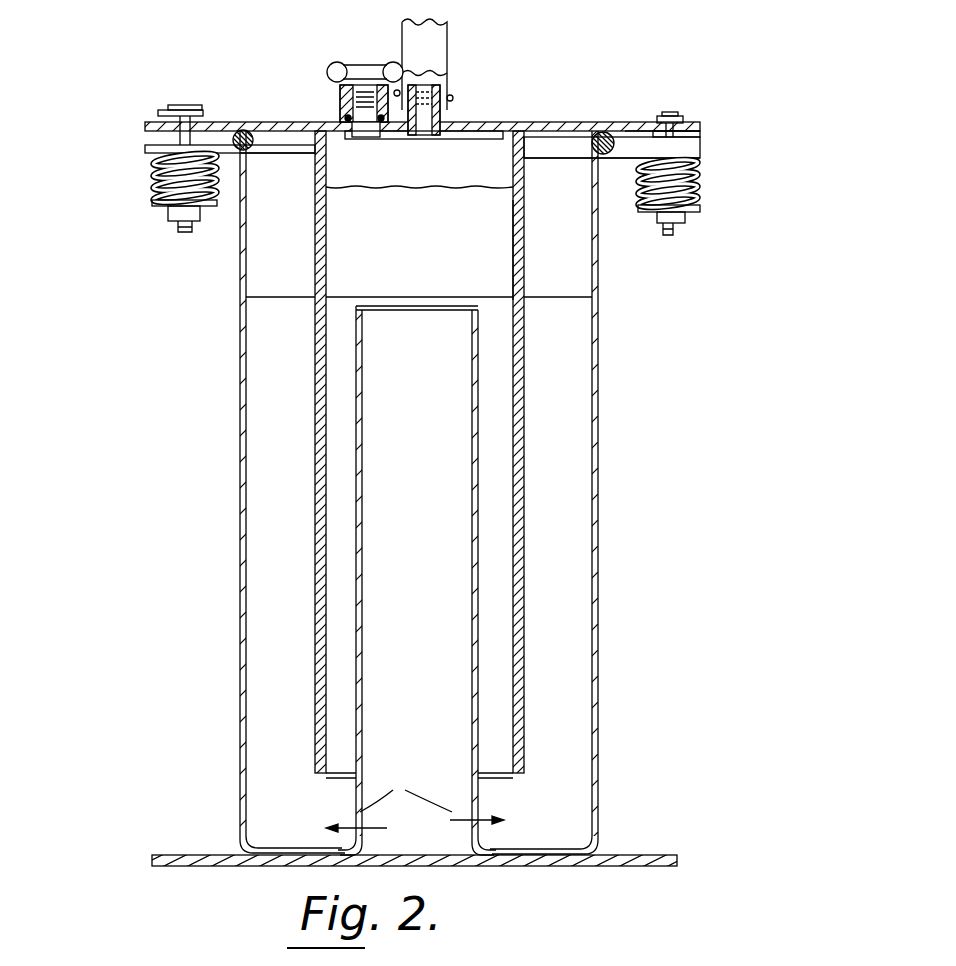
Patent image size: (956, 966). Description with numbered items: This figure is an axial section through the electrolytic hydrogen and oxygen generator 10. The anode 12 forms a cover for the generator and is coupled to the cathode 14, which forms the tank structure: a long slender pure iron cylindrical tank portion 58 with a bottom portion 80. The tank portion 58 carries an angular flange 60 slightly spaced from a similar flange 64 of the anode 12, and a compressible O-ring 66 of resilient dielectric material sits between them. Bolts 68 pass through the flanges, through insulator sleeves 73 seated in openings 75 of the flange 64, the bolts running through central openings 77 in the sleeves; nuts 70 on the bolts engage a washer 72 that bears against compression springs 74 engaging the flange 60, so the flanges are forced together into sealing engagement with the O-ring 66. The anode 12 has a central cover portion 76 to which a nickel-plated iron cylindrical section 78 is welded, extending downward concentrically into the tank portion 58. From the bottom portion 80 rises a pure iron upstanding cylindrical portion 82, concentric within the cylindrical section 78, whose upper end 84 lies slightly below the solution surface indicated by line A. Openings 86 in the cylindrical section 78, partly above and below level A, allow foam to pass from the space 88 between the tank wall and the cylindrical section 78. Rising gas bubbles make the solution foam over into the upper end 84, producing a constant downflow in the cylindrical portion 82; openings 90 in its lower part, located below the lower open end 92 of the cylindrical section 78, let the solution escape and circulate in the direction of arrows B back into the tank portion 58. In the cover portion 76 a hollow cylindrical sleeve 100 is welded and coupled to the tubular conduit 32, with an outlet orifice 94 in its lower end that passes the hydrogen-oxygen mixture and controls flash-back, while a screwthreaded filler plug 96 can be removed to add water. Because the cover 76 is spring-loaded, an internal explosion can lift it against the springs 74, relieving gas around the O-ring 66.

The generator 10 is at (240, 490).
The anode 12 is at (630, 127).
The cathode 14 is at (597, 509).
The tubular conduit 32 is at (435, 47).
The cylindrical tank portion 58 is at (597, 349).
The angular flange 60 is at (232, 153).
The flange 64 is at (153, 108).
The compressible O-ring 66 is at (244, 130).
The bolts 68 is at (183, 136).
The nuts 70 is at (173, 210).
The washer 72 is at (154, 199).
The insulator sleeves 73 is at (691, 122).
The compression springs 74 is at (160, 172).
The openings 75 is at (702, 128).
The central cover portion 76 is at (506, 122).
The central openings 77 is at (677, 142).
The cylindrical section 78 is at (513, 246).
The bottom portion 80 is at (520, 856).
The upstanding cylindrical portion 82 is at (478, 682).
The upper end 84 is at (425, 307).
The openings 86 is at (322, 282).
The space 88 is at (297, 298).
The openings 90 is at (415, 799).
The lower open end 92 is at (498, 780).
The outlet orifice 94 is at (420, 139).
The filler plug 96 is at (340, 98).
The hollow cylindrical sleeve 100 is at (448, 97).
The line A is at (347, 295).
The arrows B is at (404, 833).